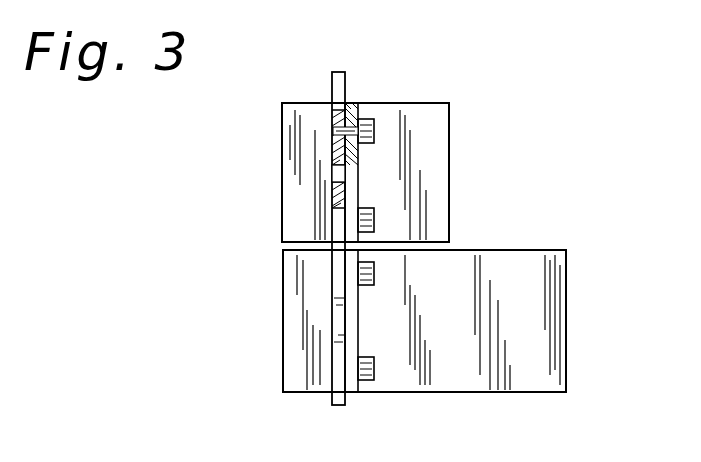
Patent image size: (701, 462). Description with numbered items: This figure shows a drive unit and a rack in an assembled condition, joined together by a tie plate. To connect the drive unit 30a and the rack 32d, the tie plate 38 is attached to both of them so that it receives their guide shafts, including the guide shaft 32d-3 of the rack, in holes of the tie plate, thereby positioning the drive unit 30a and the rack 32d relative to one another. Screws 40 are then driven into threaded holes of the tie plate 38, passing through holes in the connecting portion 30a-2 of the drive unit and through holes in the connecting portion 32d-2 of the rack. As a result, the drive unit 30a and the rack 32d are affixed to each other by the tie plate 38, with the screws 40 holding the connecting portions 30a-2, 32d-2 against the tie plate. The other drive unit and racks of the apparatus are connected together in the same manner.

The tie plate 38 is at (334, 92).
The rack 32d is at (435, 148).
The connecting portion 32d-2 is at (350, 108).
The guide shaft 32d-3 is at (335, 178).
The drive unit 30a is at (567, 315).
The connecting portion 30a-2 is at (358, 393).
The screws 40 is at (374, 126).